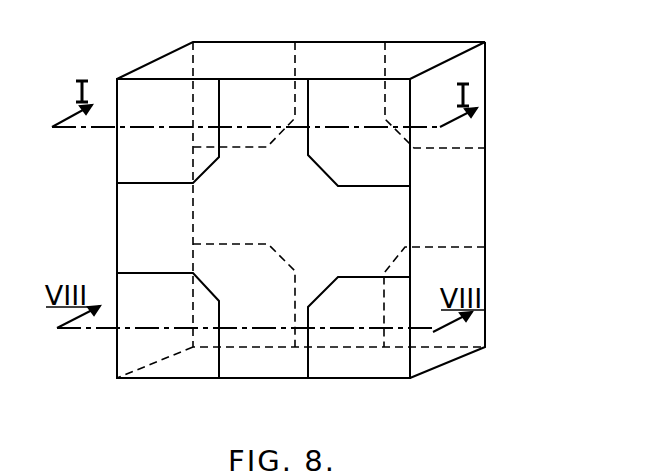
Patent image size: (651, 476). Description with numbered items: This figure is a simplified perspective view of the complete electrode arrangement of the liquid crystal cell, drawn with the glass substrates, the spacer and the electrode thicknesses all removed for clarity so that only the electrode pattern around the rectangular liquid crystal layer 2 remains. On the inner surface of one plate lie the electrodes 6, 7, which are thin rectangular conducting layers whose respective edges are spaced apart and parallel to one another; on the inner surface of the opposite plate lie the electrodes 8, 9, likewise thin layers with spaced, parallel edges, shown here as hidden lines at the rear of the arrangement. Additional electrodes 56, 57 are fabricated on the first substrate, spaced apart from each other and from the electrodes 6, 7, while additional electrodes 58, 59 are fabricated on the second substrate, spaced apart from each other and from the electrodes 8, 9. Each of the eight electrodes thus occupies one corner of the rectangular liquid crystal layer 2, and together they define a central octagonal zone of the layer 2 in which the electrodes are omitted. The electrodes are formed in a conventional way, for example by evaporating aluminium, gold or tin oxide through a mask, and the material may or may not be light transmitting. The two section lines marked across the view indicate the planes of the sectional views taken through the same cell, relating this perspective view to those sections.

The rectangular liquid crystal layer 2 is at (437, 363).
The electrode 6 is at (133, 184).
The electrode 7 is at (392, 188).
The electrode 8 is at (300, 47).
The electrode 9 is at (389, 57).
The additional electrode 56 is at (220, 373).
The additional electrode 57 is at (308, 370).
The additional electrode 58 is at (286, 262).
The additional electrode 59 is at (486, 249).